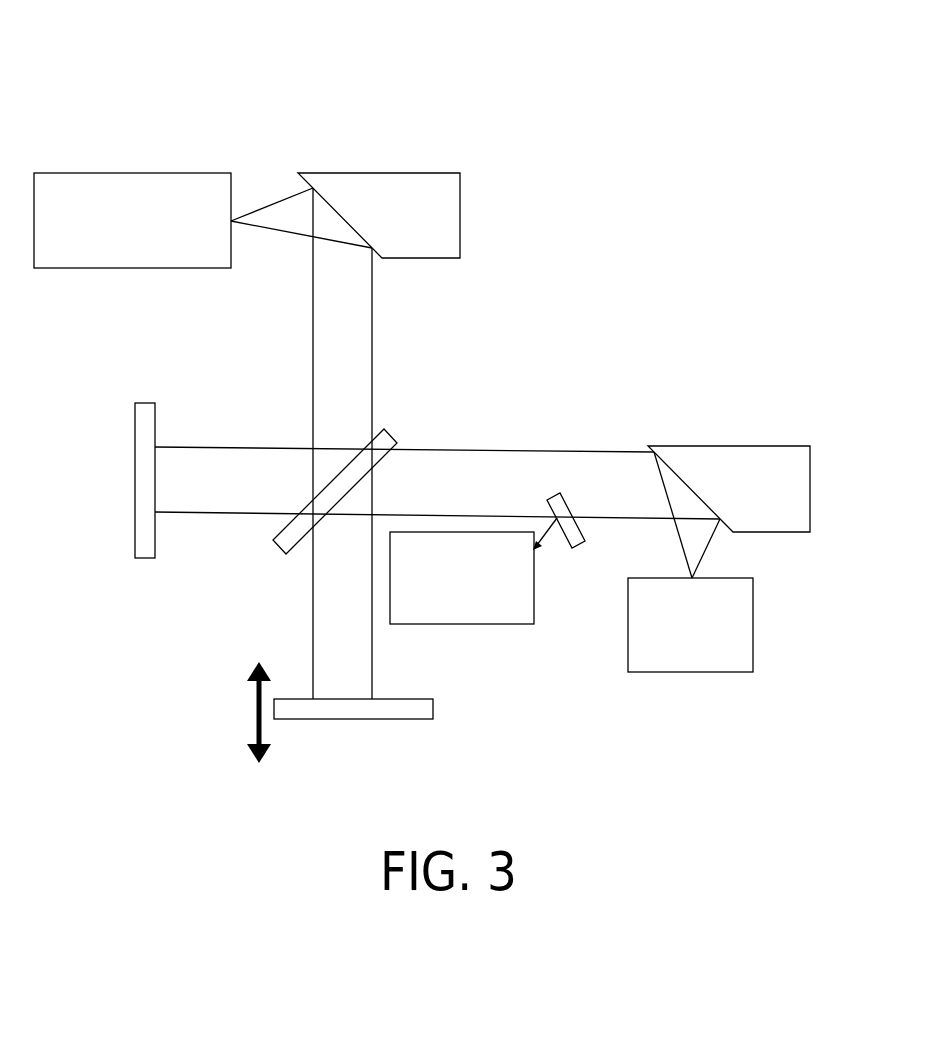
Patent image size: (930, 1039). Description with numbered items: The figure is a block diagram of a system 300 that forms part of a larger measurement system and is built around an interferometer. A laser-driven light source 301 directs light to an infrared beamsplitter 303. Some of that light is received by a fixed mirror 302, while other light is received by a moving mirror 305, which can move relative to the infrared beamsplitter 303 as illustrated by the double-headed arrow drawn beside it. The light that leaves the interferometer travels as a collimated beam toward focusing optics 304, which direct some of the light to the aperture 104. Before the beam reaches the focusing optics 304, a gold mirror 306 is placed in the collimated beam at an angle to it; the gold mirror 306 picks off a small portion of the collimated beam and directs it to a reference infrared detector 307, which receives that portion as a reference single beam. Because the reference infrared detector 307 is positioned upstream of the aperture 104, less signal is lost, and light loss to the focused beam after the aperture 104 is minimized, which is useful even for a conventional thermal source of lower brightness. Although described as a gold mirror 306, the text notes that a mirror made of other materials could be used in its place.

The system 300 is at (146, 124).
The laser-driven light source 301 is at (152, 247).
The fixed mirror 302 is at (135, 463).
The infrared beamsplitter 303 is at (382, 461).
The focusing optics 304 is at (764, 445).
The moving mirror 305 is at (354, 720).
The gold mirror 306 is at (582, 548).
The reference infrared detector 307 is at (482, 619).
The aperture 104 is at (673, 651).